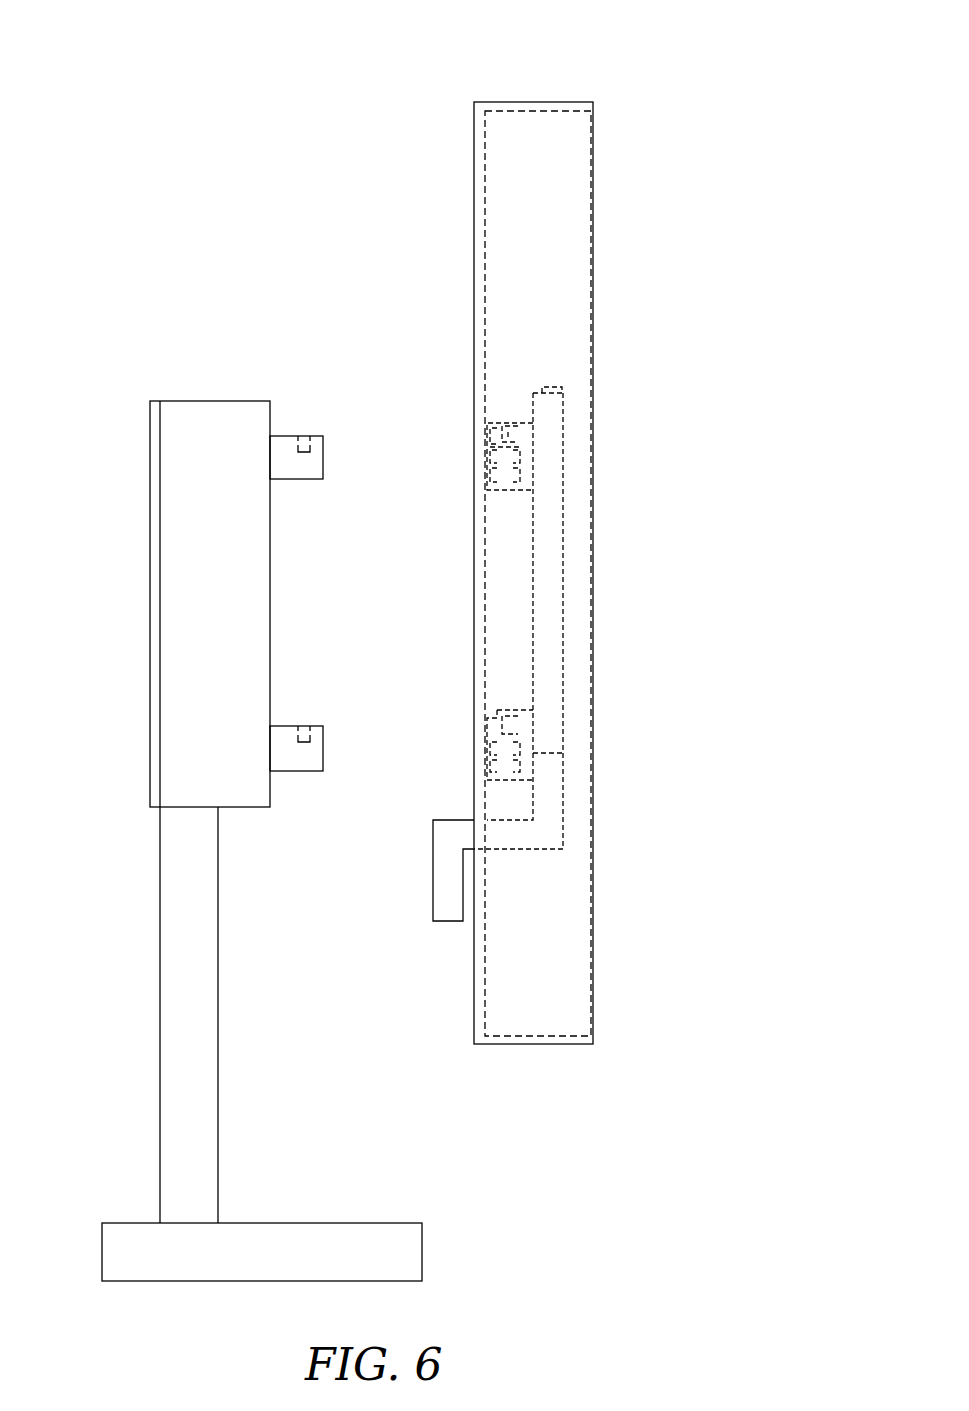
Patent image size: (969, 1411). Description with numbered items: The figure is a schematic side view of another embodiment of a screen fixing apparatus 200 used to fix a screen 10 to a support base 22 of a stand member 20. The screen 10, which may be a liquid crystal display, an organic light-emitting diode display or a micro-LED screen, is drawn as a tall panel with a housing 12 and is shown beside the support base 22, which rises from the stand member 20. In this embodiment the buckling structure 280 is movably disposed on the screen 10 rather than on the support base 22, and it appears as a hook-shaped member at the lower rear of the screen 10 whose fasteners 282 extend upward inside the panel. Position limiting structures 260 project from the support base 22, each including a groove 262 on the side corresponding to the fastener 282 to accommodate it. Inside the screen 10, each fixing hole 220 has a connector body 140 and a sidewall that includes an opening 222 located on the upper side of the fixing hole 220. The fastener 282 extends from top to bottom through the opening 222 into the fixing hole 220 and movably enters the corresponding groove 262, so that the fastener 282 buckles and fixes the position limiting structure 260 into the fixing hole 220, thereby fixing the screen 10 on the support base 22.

The screen 10 is at (614, 104).
The housing of display device 12 is at (474, 168).
The stand member 20 is at (133, 392).
The support base 22 is at (150, 482).
The connector body 140 is at (488, 448).
The screen fixing apparatus 200 is at (260, 463).
The fixing hole 220 is at (476, 436).
The opening 222 is at (510, 412).
The position limiting structure 260 is at (283, 436).
The groove 262 is at (300, 424).
The buckling structure 280 is at (442, 895).
The fastener 282 is at (518, 425).